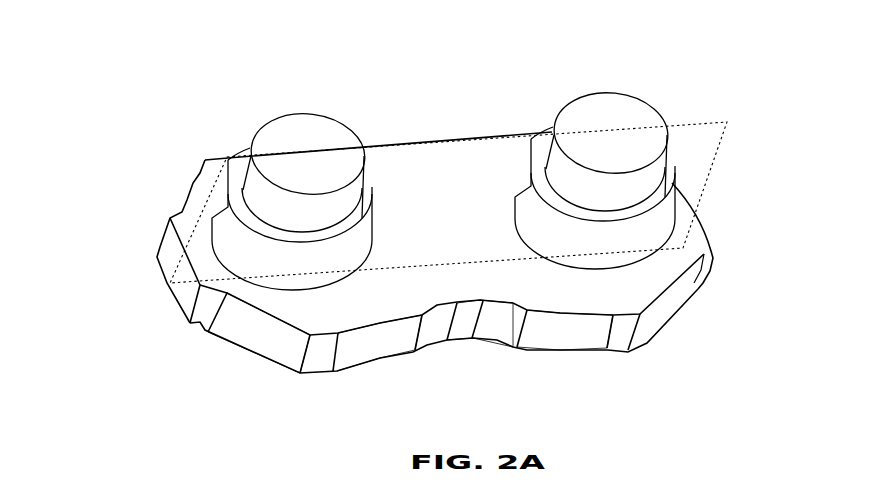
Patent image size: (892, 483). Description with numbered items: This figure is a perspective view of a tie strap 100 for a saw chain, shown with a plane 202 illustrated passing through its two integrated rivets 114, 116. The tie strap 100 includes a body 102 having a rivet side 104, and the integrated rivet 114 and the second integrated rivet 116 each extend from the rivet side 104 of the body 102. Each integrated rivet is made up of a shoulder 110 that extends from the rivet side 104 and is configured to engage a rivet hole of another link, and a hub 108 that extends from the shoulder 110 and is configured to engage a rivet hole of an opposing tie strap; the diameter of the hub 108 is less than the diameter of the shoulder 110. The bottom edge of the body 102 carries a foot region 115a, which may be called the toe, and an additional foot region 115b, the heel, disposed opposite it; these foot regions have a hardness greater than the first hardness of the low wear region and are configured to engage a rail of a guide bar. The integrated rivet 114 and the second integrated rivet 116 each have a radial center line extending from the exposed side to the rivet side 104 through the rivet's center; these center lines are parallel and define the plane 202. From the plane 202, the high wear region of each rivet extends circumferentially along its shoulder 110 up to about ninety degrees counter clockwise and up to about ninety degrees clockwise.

The tie strap 100 is at (113, 112).
The body 102 is at (363, 340).
The rivet side 104 is at (520, 277).
The hub 108 is at (258, 168).
The shoulder 110 is at (251, 248).
The integrated rivet 114 is at (299, 98).
The second integrated rivet 116 is at (604, 73).
The foot region 115a is at (627, 232).
The additional foot region 115b is at (300, 355).
The plane 202 is at (693, 153).